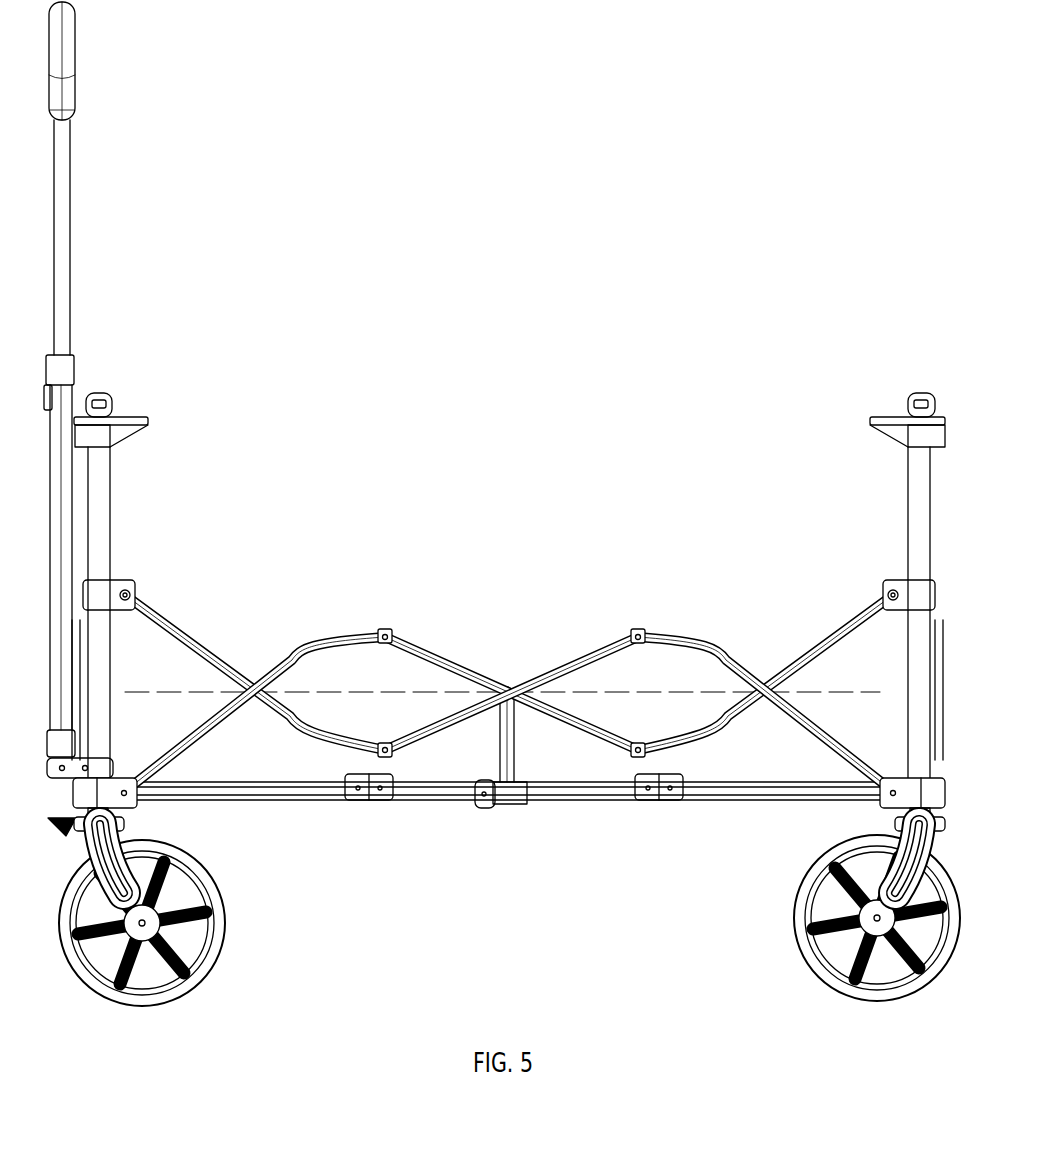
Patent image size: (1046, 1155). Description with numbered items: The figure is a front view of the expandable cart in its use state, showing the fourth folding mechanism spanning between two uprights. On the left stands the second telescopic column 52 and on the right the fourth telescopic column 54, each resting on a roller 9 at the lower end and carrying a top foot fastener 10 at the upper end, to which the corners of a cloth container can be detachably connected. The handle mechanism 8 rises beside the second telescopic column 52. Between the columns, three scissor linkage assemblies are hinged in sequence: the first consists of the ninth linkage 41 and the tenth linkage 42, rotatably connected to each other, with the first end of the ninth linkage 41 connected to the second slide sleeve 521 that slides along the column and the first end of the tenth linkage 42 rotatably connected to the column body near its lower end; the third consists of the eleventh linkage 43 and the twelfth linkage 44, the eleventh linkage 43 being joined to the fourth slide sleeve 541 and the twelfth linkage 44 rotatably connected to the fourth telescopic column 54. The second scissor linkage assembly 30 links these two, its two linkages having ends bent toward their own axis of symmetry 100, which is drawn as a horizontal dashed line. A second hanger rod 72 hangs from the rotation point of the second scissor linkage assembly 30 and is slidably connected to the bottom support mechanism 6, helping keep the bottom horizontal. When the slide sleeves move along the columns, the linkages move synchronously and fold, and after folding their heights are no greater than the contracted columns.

The bottom support mechanism 6 is at (436, 803).
The handle mechanism 8 is at (70, 319).
The roller 9 is at (230, 928).
The top foot fastener 10 is at (905, 397).
The second scissor linkage assembly 30 is at (568, 652).
The ninth linkage 41 is at (203, 630).
The tenth linkage 42 is at (210, 748).
The eleventh linkage 43 is at (830, 628).
The twelfth linkage 44 is at (828, 752).
The second telescopic column 52 is at (108, 505).
The fourth telescopic column 54 is at (907, 481).
The second hanger rod 72 is at (518, 756).
The axis of symmetry 100 is at (817, 693).
The second slide sleeve 521 is at (120, 578).
The fourth slide sleeve 541 is at (897, 578).